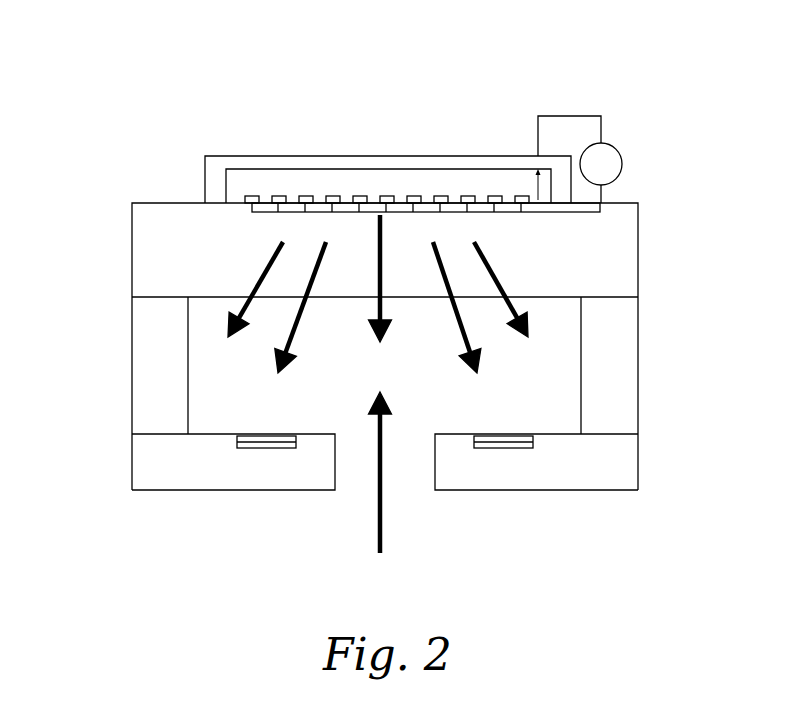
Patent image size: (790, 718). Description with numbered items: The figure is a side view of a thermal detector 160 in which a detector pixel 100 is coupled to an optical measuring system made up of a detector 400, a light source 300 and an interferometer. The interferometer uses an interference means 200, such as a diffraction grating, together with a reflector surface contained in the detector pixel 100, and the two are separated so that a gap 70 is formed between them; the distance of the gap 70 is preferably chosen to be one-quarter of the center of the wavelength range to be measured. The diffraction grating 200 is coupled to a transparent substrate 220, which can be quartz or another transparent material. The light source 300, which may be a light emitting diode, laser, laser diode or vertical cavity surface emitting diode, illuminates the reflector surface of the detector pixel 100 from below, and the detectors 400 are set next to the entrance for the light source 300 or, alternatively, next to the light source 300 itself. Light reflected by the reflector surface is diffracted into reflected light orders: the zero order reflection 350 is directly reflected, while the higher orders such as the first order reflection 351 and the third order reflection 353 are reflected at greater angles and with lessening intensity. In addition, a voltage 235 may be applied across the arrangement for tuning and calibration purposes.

The thermal detector 160 is at (538, 42).
The detector pixel 100 is at (235, 162).
The gap 70 is at (315, 180).
The interference means 200 is at (523, 197).
The voltage 235 is at (617, 147).
The transparent substrate 220 is at (613, 240).
The zero order reflection 350 is at (377, 232).
The third order reflection 353 is at (262, 276).
The first order reflection 351 is at (293, 325).
The light source 300 is at (382, 488).
The detector 400 is at (263, 461).